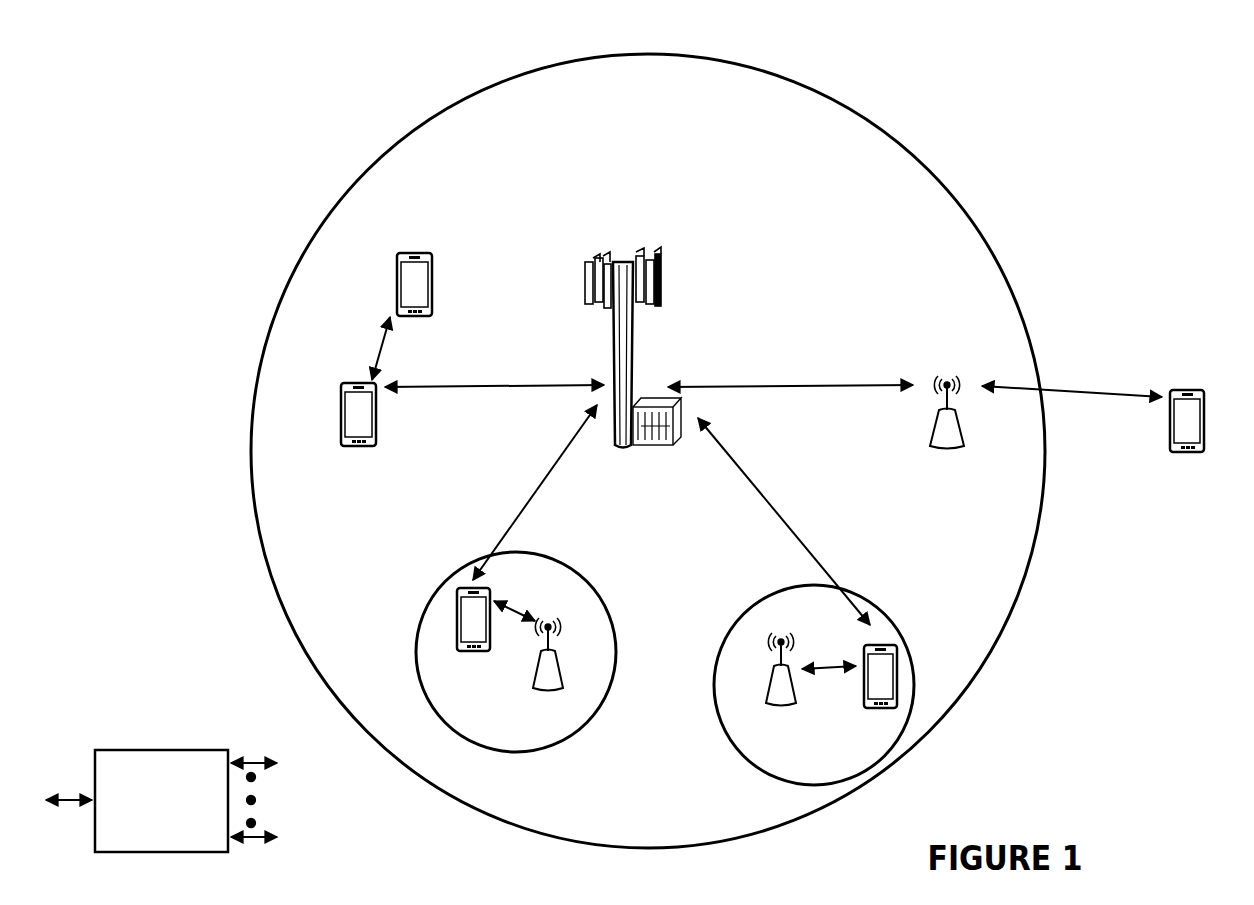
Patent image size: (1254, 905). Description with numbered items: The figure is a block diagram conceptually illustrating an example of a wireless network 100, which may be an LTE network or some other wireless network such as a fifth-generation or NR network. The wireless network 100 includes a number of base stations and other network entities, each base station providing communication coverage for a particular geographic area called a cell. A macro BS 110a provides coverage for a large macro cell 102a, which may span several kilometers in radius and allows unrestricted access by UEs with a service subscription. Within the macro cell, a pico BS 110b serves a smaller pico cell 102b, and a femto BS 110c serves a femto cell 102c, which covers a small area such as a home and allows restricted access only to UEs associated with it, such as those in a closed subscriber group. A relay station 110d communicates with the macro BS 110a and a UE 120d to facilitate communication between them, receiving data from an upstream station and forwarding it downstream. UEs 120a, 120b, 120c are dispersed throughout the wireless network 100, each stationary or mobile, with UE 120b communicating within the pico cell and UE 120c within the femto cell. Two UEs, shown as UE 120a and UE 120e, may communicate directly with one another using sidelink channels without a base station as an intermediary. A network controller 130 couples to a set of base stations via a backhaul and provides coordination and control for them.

The wireless network 100 is at (142, 48).
The macro cell 102a is at (912, 150).
The pico cell 102b is at (603, 592).
The femto cell 102c is at (752, 600).
The macro BS 110a is at (650, 248).
The pico BS 110b is at (574, 672).
The femto BS 110c is at (764, 692).
The relay station 110d is at (947, 376).
The UE 120a is at (342, 410).
The UE 120b is at (458, 652).
The UE 120c is at (866, 708).
The UE 120d is at (1193, 387).
The UE 120e is at (400, 275).
The network controller 130 is at (158, 749).